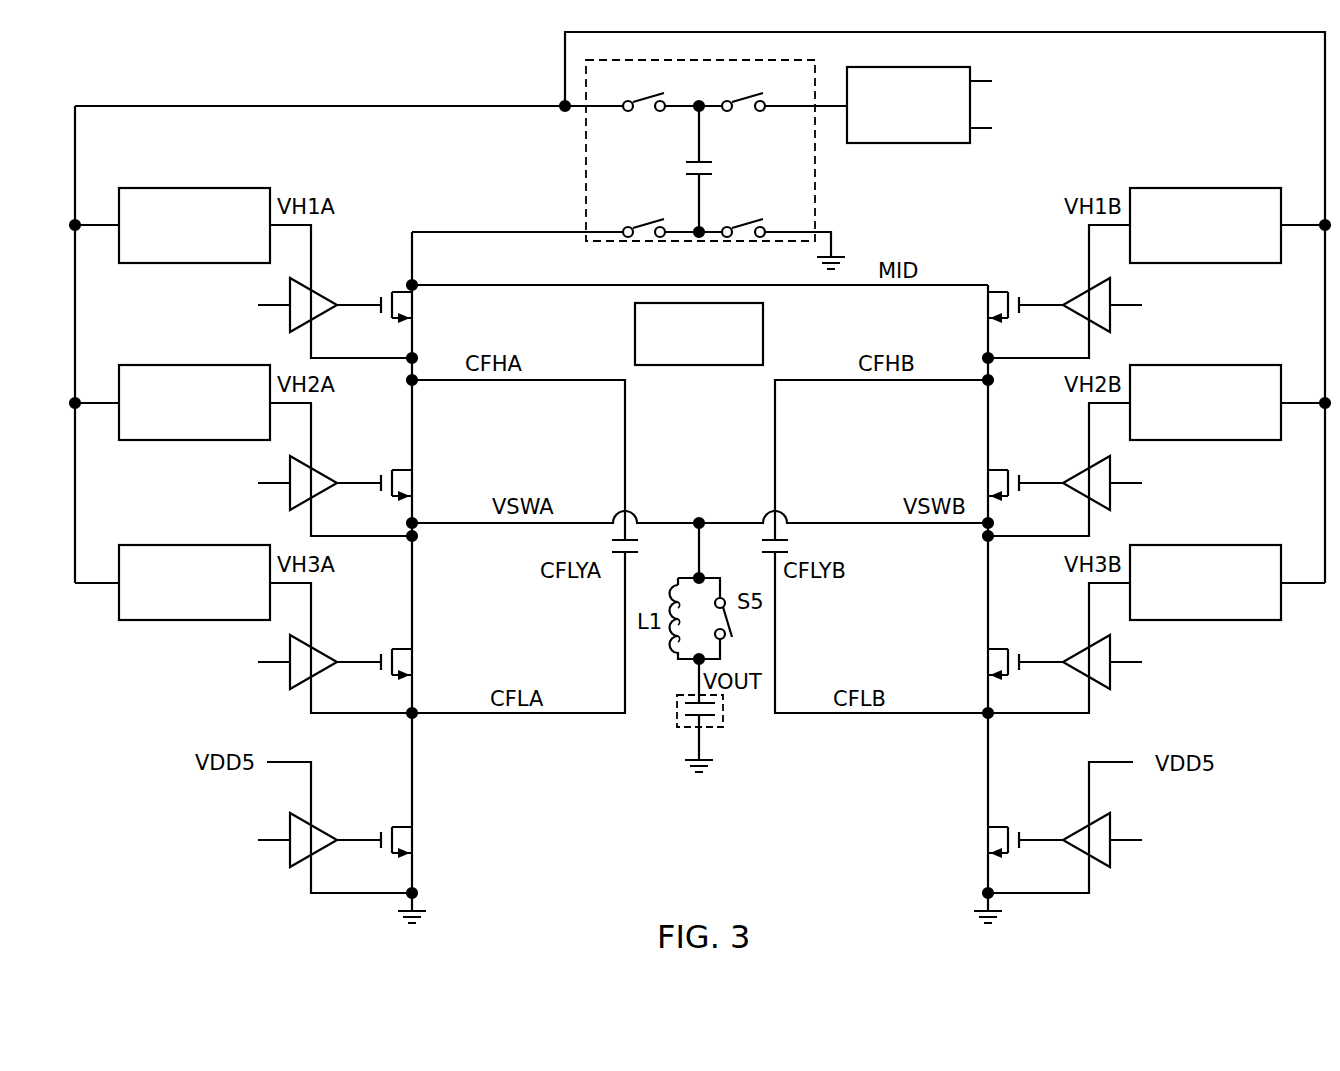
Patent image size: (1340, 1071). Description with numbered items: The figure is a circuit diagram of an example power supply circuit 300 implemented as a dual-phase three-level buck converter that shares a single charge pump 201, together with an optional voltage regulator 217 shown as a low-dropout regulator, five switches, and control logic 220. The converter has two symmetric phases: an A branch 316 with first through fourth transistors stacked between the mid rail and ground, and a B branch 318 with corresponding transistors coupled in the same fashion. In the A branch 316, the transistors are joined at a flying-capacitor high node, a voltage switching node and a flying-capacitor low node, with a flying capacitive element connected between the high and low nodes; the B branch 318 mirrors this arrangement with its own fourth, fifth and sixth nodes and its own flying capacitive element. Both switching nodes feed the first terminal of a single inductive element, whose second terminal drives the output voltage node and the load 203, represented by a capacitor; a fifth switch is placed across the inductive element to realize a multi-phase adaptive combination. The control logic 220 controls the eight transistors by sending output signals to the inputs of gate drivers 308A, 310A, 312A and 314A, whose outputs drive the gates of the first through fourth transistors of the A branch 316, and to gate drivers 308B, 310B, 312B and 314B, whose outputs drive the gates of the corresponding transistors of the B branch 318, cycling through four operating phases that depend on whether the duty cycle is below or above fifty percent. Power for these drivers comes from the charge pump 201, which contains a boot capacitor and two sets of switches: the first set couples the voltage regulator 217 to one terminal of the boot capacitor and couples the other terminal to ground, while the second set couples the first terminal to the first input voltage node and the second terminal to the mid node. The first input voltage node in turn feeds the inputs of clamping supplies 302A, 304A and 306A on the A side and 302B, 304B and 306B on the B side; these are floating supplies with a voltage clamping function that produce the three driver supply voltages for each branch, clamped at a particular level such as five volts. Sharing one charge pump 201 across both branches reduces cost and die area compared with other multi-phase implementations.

The power supply circuit 300 is at (114, 56).
The charge pump 201 is at (586, 181).
The voltage regulator 217 is at (920, 143).
The control logic 220 is at (763, 343).
The load 203 is at (718, 727).
The clamping supply 302A is at (217, 188).
The clamping supply 304A is at (217, 365).
The clamping supply 306A is at (217, 545).
The clamping supply 302B is at (1183, 188).
The clamping supply 304B is at (1183, 365).
The clamping supply 306B is at (1183, 545).
The gate driver 308A is at (320, 290).
The gate driver 310A is at (322, 473).
The gate driver 312A is at (322, 652).
The gate driver 314A is at (322, 830).
The gate driver 308B is at (1080, 290).
The gate driver 310B is at (1078, 473).
The gate driver 312B is at (1078, 652).
The gate driver 314B is at (1078, 830).
The A branch 316 is at (360, 922).
The B branch 318 is at (1070, 922).